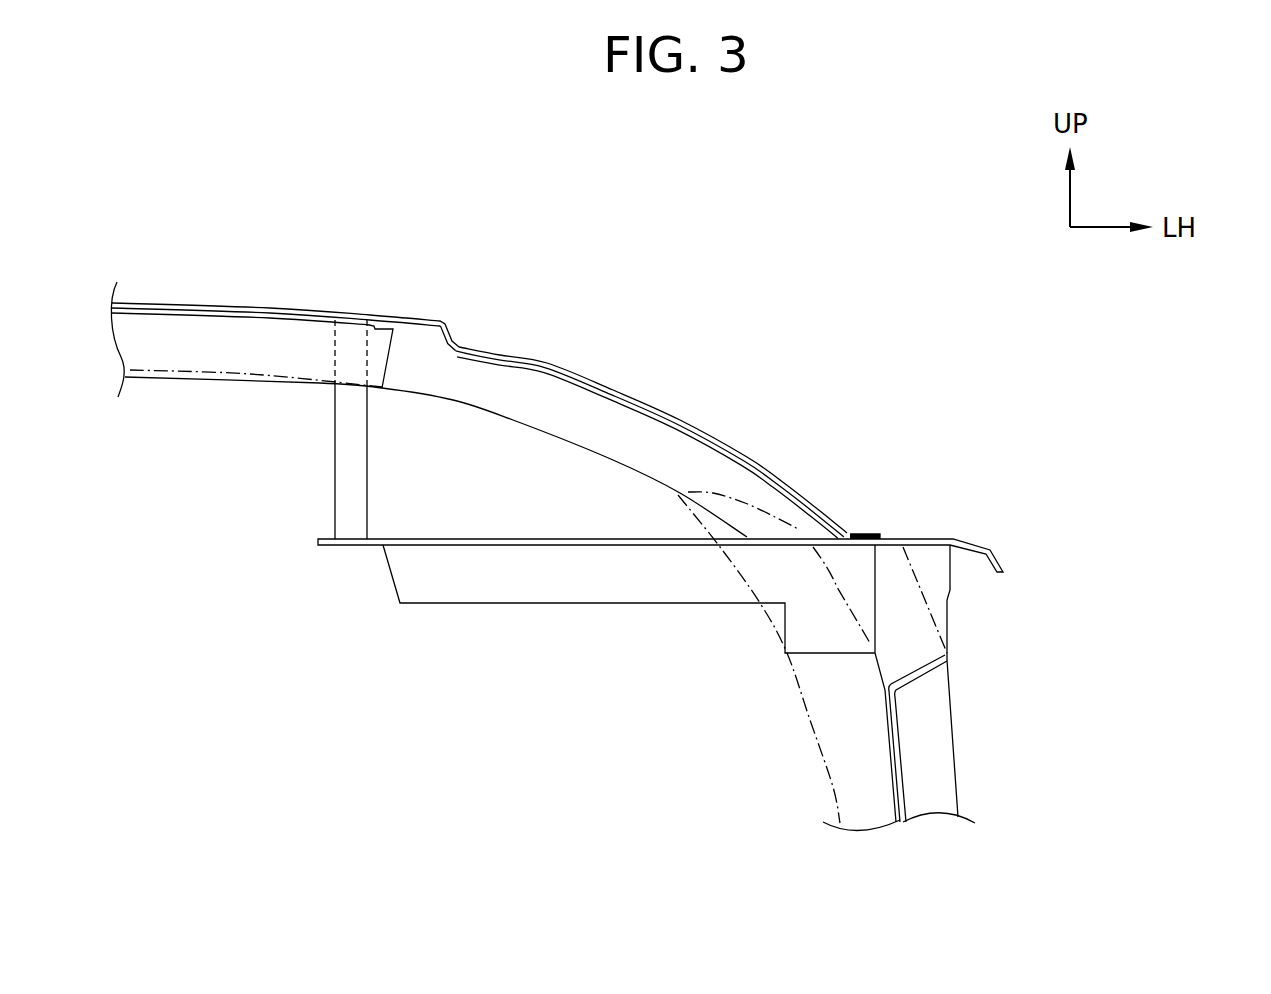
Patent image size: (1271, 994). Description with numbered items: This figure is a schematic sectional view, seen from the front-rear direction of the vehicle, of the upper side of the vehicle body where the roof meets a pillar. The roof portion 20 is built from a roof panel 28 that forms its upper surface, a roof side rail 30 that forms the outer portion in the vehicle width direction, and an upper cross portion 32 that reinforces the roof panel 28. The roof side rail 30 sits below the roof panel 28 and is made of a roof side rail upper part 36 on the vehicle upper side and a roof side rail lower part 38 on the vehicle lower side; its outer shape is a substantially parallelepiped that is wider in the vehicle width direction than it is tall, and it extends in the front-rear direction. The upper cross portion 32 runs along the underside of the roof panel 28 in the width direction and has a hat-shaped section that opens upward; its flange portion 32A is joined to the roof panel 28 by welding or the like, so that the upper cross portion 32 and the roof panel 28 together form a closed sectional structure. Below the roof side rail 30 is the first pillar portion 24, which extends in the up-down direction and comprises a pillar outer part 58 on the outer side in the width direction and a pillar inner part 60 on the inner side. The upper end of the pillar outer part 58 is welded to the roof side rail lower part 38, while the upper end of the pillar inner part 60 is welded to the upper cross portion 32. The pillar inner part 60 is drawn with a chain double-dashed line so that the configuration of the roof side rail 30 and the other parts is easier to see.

The roof portion 20 is at (808, 350).
The first pillar portion 24 is at (993, 685).
The roof panel 28 is at (443, 320).
The roof side rail 30 is at (942, 528).
The upper cross portion 32 is at (512, 423).
The flange portion 32A is at (660, 400).
The roof side rail upper part 36 is at (553, 543).
The roof side rail lower part 38 is at (620, 605).
The pillar outer part 58 is at (930, 748).
The pillar inner part 60 is at (812, 732).